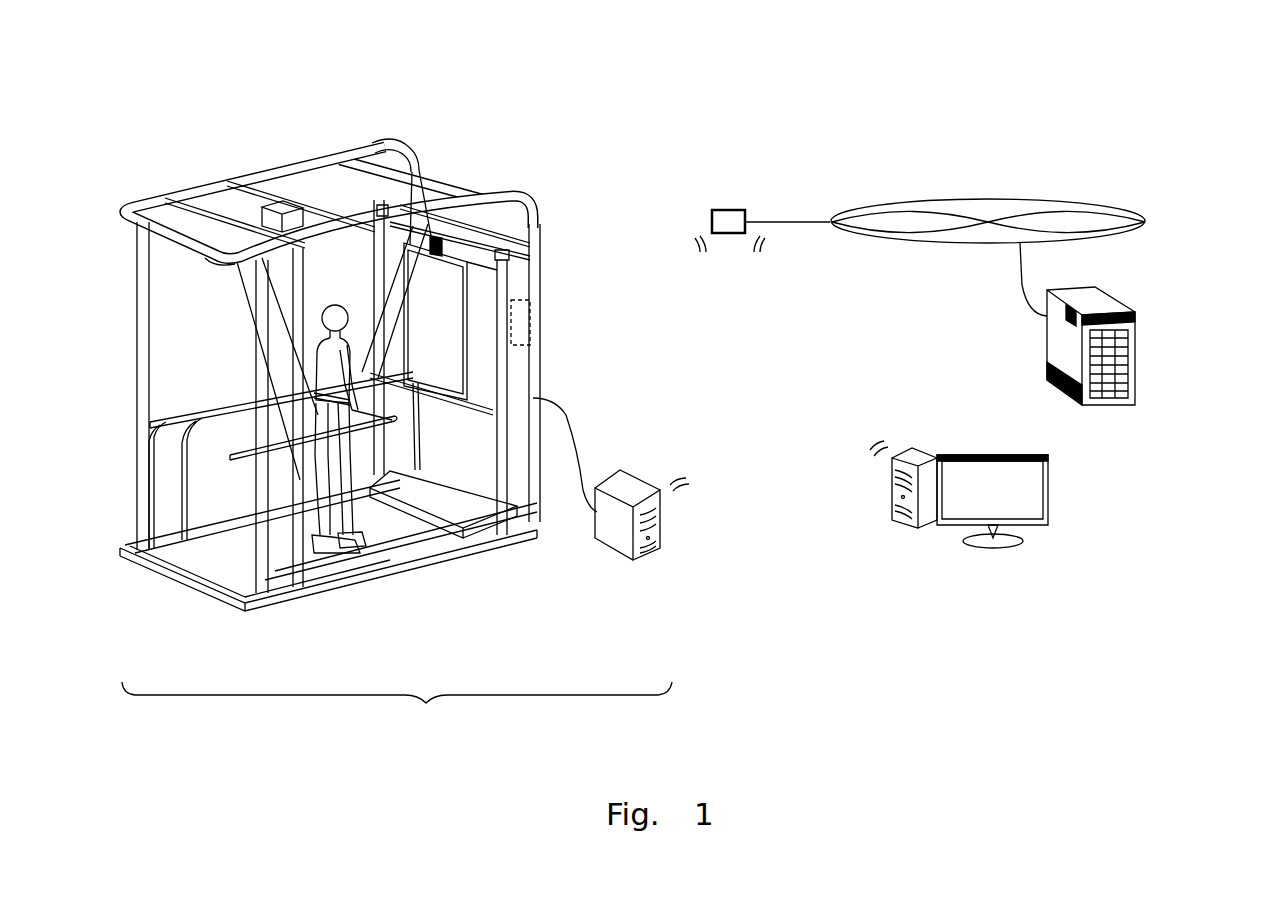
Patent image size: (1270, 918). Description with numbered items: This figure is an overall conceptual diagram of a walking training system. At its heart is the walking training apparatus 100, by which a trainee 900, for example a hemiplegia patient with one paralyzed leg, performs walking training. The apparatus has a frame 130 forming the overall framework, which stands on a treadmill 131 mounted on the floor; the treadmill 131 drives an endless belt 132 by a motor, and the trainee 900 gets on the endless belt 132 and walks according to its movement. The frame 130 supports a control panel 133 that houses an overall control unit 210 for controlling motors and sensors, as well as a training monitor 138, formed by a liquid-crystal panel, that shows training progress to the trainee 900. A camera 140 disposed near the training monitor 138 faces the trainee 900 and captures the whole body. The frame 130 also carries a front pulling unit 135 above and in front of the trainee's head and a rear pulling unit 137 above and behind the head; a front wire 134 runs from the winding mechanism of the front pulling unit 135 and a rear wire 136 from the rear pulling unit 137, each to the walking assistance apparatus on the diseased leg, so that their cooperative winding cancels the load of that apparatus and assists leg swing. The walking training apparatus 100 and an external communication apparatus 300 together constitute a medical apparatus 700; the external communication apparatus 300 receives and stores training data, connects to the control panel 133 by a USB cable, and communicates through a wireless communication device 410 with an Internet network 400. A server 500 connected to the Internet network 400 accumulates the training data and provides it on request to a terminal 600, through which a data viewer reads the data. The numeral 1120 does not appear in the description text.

The walking training apparatus 100 is at (160, 118).
The frame 130 is at (537, 224).
The treadmill 131 is at (384, 573).
The endless belt 132 is at (203, 571).
The control panel 133 is at (519, 277).
The front wire 134 is at (412, 402).
The front pulling unit 135 is at (390, 196).
The rear wire 136 is at (246, 302).
The rear pulling unit 137 is at (214, 266).
The training monitor 138 is at (450, 327).
The camera 140 is at (480, 192).
The overall control unit 210 is at (531, 333).
The external communication apparatus 300 is at (636, 478).
The Internet network 400 is at (1150, 222).
The wireless communication device 410 is at (727, 208).
The server 500 is at (1121, 405).
The terminal 600 is at (948, 447).
The medical apparatus 700 is at (397, 707).
The trainee 900 is at (336, 292).
The treadmill 1120 is at (402, 458).